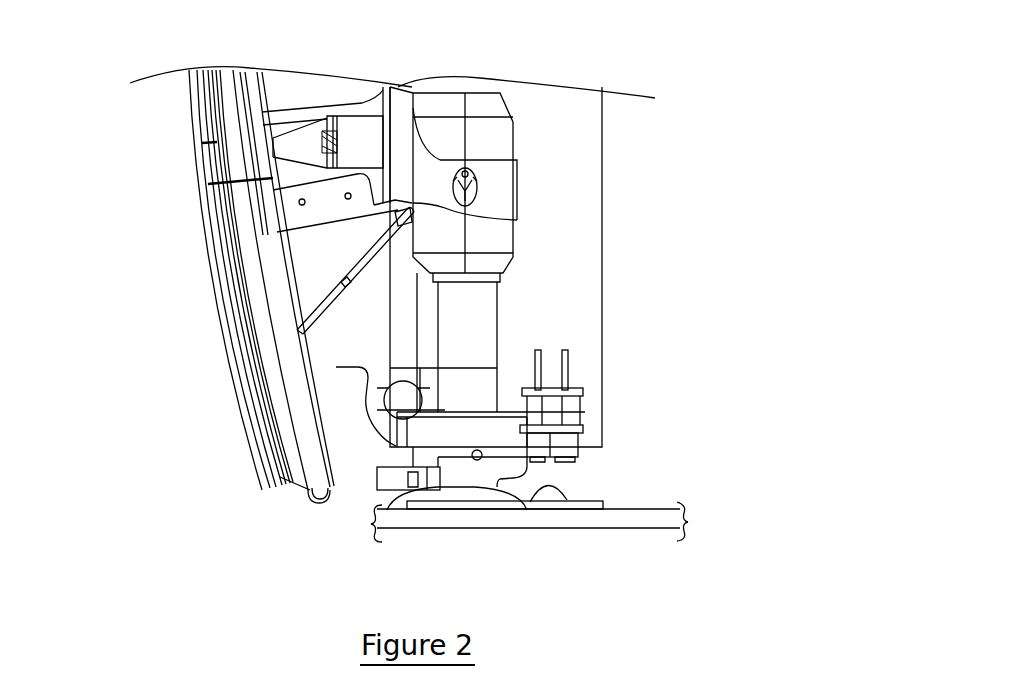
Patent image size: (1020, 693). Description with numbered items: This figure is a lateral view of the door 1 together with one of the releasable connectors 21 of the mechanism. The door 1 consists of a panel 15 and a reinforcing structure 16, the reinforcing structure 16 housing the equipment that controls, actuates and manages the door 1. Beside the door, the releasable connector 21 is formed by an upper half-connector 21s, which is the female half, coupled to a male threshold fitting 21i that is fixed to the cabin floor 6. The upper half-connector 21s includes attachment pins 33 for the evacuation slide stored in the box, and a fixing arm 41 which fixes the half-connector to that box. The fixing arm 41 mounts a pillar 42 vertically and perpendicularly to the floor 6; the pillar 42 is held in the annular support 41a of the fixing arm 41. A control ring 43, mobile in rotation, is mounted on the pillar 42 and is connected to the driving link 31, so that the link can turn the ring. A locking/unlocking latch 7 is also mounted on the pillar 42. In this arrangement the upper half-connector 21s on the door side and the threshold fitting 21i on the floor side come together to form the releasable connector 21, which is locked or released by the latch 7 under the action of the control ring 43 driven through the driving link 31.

The door 1 is at (385, 62).
The cabin floor 6 is at (615, 522).
The locking/unlocking latch 7 is at (593, 406).
The panel 15 is at (305, 494).
The reinforcing structure 16 is at (316, 285).
The releasable connector 21 is at (547, 136).
The upper half-connector 21s is at (733, 93).
The male threshold fitting 21i is at (567, 500).
The driving link 31 is at (406, 392).
The attachment pins 33 is at (386, 490).
The fixing arm 41 is at (398, 110).
The annular support 41a is at (505, 192).
The pillar 42 is at (487, 322).
The control ring 43 is at (503, 432).